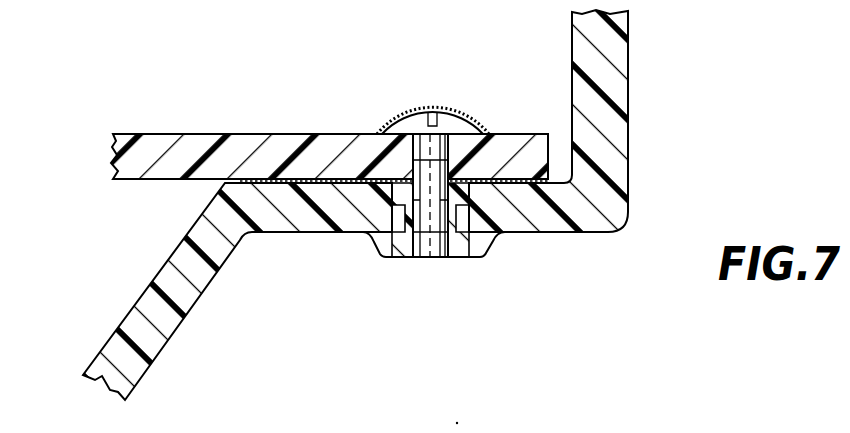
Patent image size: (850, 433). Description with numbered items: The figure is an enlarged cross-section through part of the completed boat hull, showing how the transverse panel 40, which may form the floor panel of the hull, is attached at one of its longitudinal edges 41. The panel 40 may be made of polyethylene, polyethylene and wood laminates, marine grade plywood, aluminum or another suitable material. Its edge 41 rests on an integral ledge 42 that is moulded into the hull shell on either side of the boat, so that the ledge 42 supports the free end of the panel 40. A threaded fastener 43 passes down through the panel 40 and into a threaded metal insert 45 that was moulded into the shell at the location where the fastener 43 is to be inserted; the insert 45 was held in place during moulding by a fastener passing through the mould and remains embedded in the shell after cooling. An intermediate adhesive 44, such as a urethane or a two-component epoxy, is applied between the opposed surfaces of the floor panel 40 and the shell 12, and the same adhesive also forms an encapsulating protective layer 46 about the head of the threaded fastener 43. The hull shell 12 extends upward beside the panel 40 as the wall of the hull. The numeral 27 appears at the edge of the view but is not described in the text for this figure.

The outer shell mould 12 is at (612, 216).
The cross member 27 is at (17, 4).
The transverse panel 40 is at (172, 134).
The longitudinal edges 41 is at (512, 150).
The integral ledges 42 is at (360, 186).
The threaded fasteners 43 is at (409, 118).
The intermediate adhesive 44 is at (228, 187).
The threaded metal inserts 45 is at (463, 256).
The encapsulating protective layer 46 is at (391, 128).